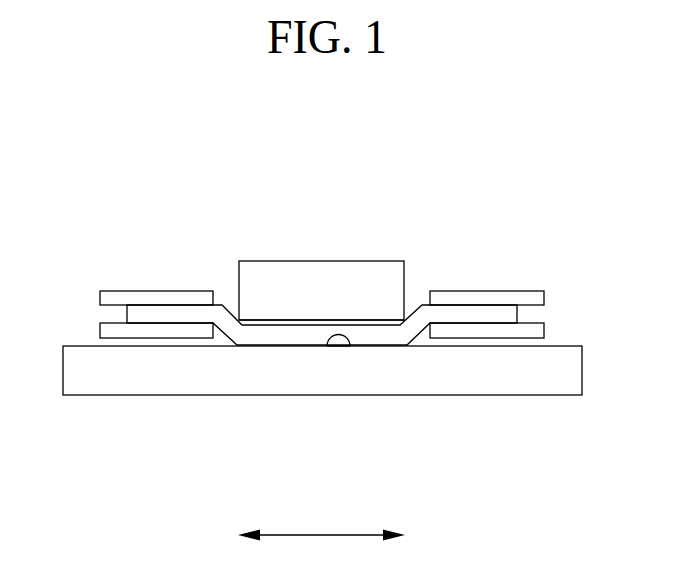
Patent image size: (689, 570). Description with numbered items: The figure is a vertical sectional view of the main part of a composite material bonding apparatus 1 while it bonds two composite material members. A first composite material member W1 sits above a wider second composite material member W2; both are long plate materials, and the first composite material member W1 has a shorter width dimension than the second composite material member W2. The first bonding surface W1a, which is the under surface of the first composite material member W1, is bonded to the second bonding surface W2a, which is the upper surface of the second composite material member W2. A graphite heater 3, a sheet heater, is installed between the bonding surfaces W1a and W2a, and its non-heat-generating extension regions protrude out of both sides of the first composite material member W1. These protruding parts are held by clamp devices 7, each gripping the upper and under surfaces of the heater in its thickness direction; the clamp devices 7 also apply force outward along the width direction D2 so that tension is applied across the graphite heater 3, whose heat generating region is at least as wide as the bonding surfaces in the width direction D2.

The composite material bonding apparatus 1 is at (76, 254).
The graphite heater 3 is at (380, 334).
The clamp device 7 is at (155, 291).
The first composite material member W1 is at (325, 261).
The first bonding surface W1a is at (269, 328).
The second composite material member W2 is at (442, 395).
The second bonding surface W2a is at (350, 346).
The width direction D2 is at (321, 518).